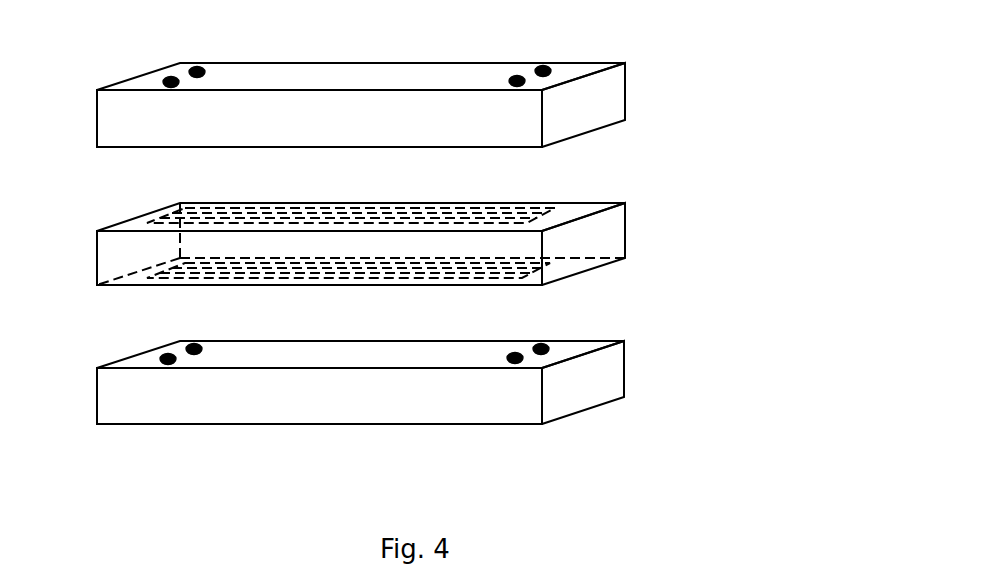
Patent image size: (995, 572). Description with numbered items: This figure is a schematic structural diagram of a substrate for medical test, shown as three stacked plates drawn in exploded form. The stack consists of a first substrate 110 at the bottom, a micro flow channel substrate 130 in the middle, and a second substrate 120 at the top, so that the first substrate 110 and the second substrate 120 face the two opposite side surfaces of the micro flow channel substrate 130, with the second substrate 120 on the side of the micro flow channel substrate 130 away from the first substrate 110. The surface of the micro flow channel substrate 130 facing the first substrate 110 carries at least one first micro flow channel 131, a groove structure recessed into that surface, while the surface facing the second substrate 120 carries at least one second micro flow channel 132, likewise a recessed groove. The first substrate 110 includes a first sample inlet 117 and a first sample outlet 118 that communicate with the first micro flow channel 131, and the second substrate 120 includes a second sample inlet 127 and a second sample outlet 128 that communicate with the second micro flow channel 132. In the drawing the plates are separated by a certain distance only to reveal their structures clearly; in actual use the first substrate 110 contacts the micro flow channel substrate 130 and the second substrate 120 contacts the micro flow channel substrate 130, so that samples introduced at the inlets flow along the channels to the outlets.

The first substrate 110 is at (347, 399).
The first sample inlet 117 is at (198, 345).
The first sample outlet 118 is at (546, 343).
The second substrate 120 is at (387, 82).
The second sample inlet 127 is at (200, 68).
The second sample outlet 128 is at (548, 66).
The micro flow channel substrate 130 is at (401, 249).
The first micro flow channel 131 is at (320, 277).
The second micro flow channel 132 is at (515, 203).